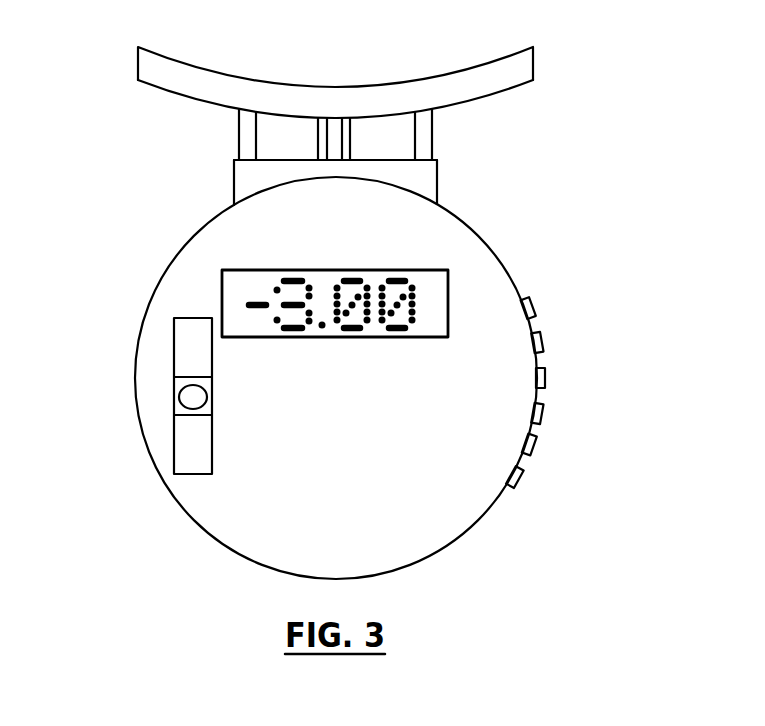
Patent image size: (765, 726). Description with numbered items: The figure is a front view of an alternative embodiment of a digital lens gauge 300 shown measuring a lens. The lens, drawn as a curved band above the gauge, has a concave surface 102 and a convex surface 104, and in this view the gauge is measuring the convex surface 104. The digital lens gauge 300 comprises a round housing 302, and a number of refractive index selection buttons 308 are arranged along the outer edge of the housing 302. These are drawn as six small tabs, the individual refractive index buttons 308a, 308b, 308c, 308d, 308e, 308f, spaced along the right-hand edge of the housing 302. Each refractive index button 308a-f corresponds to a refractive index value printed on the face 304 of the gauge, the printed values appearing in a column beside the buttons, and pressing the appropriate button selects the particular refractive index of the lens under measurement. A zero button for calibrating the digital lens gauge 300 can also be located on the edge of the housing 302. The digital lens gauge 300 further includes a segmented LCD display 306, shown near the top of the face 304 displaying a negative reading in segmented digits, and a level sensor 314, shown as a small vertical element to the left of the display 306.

The concave surface 102 is at (193, 63).
The convex surface 104 is at (163, 90).
The digital lens gauge 300 is at (512, 260).
The housing 302 is at (470, 228).
The face 304 is at (383, 238).
The segmented LCD display 306 is at (220, 285).
The refractive index selection buttons 308 is at (590, 360).
The refractive index button 308a is at (528, 300).
The refractive index button 308b is at (540, 334).
The refractive index button 308c is at (546, 378).
The refractive index button 308d is at (543, 413).
The refractive index button 308e is at (535, 446).
The refractive index button 308f is at (521, 480).
The level sensor 314 is at (192, 350).